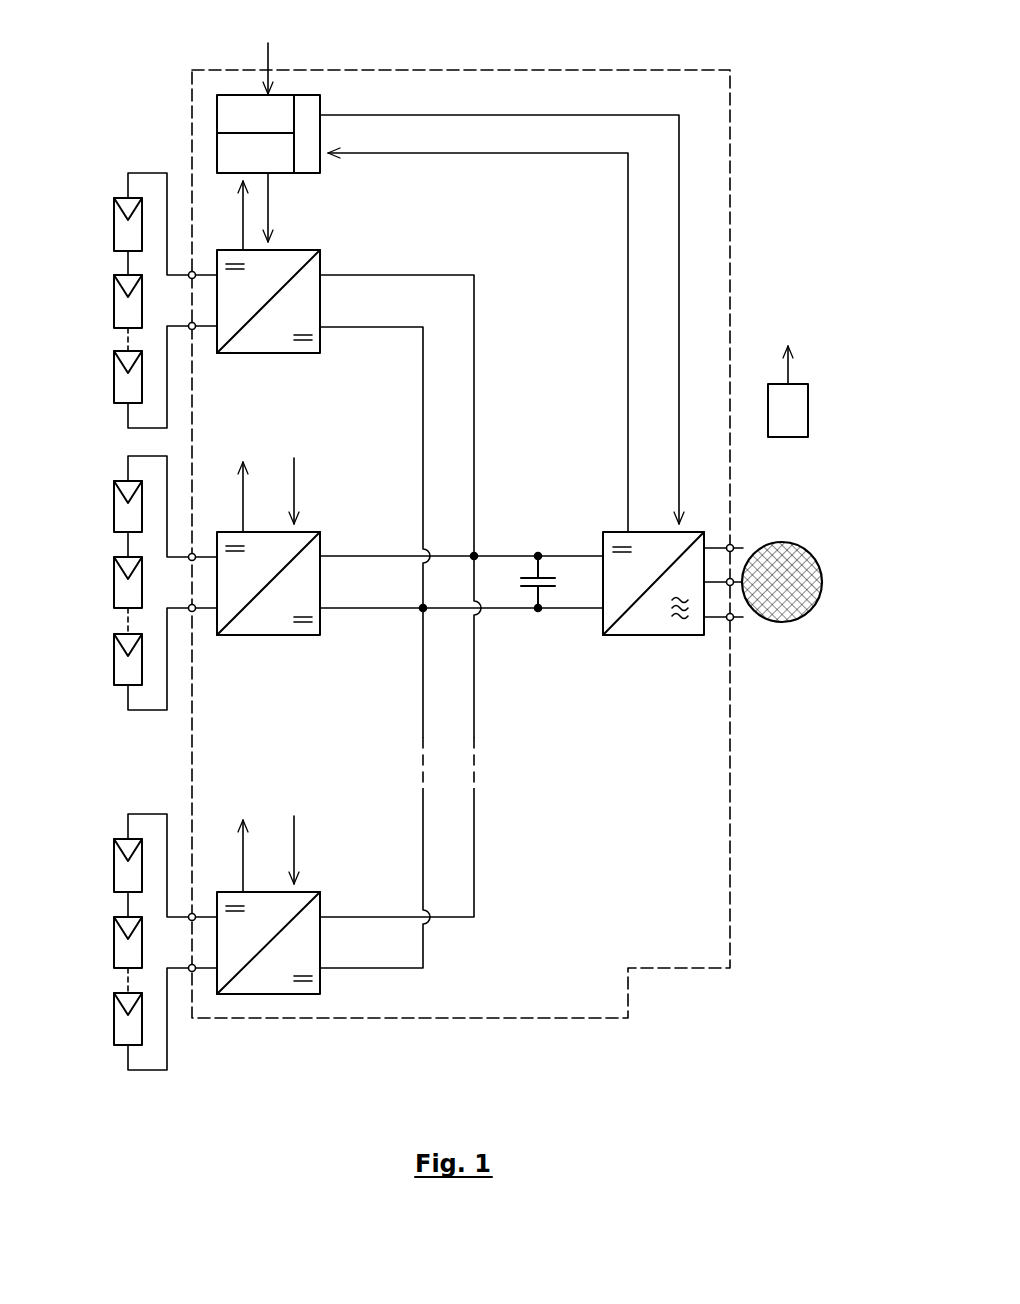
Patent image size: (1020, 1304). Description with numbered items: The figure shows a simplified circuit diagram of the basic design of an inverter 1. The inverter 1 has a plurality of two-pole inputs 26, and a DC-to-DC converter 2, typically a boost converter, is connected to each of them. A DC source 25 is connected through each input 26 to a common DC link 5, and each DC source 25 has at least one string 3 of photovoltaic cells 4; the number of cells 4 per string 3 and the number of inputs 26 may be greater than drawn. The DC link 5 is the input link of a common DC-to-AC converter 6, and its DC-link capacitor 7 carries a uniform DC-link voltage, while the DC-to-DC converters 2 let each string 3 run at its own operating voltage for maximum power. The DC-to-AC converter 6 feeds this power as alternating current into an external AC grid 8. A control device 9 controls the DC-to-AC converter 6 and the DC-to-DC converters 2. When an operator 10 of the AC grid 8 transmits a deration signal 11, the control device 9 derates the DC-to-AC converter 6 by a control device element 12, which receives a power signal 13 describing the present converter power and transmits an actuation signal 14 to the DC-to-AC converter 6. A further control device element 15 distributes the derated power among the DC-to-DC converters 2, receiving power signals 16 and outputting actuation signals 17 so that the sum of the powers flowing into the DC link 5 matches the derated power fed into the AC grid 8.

The inverter 1 is at (741, 176).
The DC-to-DC converter 2 is at (323, 245).
The string 3 is at (113, 409).
The photovoltaic cell 4 is at (114, 373).
The DC link 5 is at (538, 620).
The DC-to-AC converter 6 is at (653, 638).
The intermediate circuit capacitor 7 is at (551, 578).
The AC grid 8 is at (801, 532).
The control device 9 is at (301, 82).
The operator 10 is at (808, 410).
The deration signal 11 is at (265, 58).
The control device element 12 is at (319, 95).
The power signal 13 is at (414, 151).
The actuation signal 14 is at (535, 114).
The further control device element 15 is at (216, 152).
The power signal 16 is at (240, 223).
The actuation signal 17 is at (271, 214).
The DC source 25 is at (92, 1129).
The two-pole input 26 is at (188, 268).